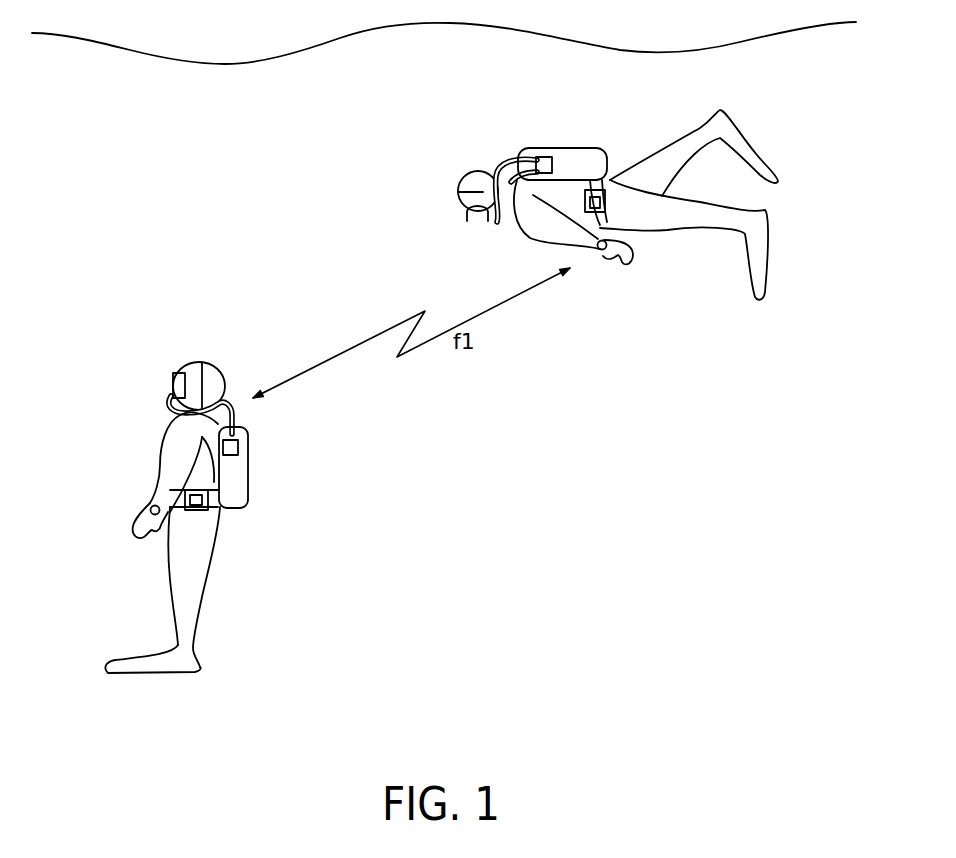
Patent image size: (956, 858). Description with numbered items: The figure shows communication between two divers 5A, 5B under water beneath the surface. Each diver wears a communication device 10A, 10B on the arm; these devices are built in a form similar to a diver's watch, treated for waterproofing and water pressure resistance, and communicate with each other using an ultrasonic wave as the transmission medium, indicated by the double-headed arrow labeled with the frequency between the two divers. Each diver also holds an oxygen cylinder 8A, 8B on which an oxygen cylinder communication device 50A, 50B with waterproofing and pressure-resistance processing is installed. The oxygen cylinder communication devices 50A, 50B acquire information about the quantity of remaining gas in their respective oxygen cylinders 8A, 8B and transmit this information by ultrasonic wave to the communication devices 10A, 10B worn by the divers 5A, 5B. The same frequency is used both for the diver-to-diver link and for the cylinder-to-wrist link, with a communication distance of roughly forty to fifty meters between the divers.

The diver 5A is at (135, 368).
The diver 5B is at (472, 114).
The oxygen cylinder communication device 50A is at (252, 446).
The oxygen cylinder communication device 50B is at (545, 144).
The oxygen cylinder 8A is at (232, 516).
The oxygen cylinder 8B is at (615, 162).
The communication device 10A is at (138, 503).
The communication device 10B is at (599, 262).